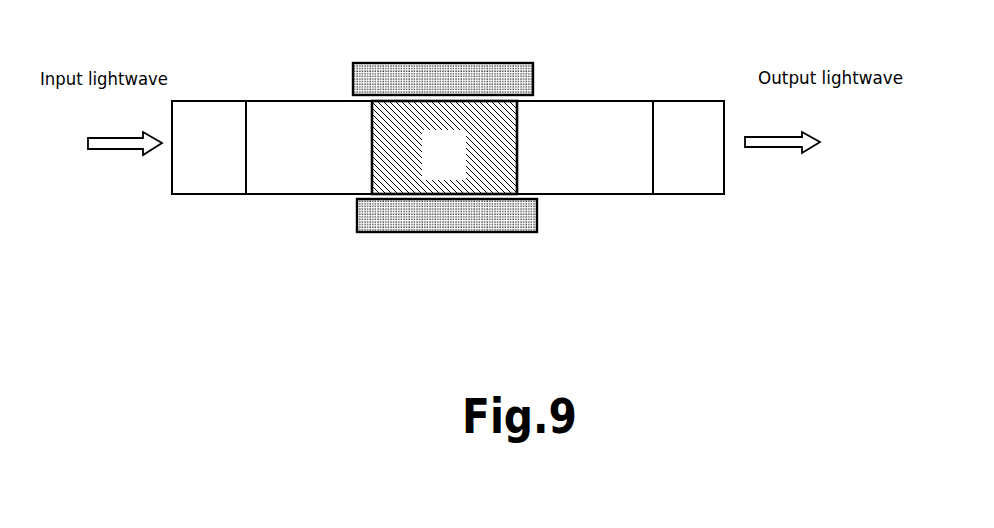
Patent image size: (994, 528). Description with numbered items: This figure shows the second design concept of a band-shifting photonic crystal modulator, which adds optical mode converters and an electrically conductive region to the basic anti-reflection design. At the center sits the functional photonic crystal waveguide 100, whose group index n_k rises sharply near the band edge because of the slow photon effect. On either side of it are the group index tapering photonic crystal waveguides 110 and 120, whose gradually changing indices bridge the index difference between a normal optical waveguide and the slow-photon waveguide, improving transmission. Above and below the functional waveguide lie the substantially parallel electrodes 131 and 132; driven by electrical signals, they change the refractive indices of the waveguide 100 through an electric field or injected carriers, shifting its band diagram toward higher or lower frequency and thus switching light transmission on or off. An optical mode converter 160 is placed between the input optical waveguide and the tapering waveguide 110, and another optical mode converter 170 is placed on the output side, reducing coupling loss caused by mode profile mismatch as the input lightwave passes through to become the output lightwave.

The functional photonic crystal waveguide 100 is at (444, 147).
The group index tapering photonic crystal waveguide 110 is at (297, 120).
The group index tapering photonic crystal waveguide 120 is at (588, 120).
The electrode 131 is at (446, 78).
The electrode 132 is at (442, 212).
The optical mode converter 160 is at (213, 130).
The optical mode converter 170 is at (692, 120).